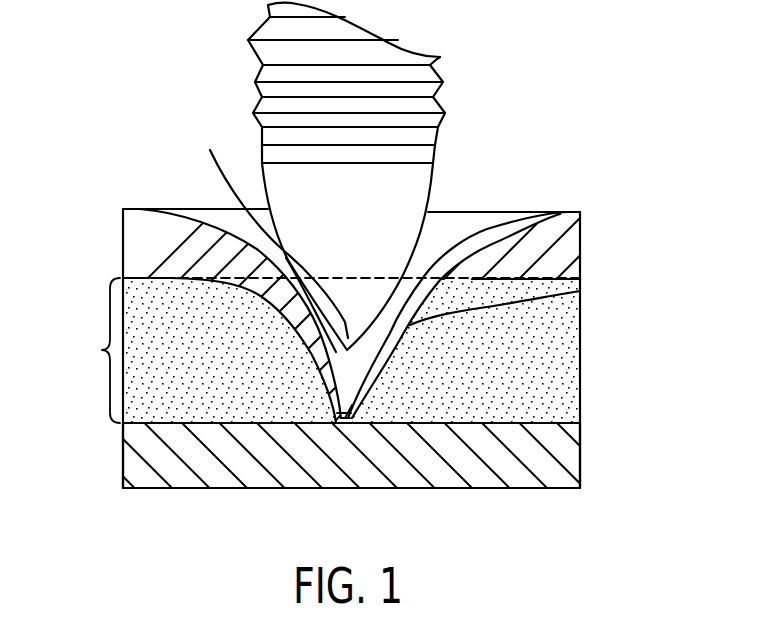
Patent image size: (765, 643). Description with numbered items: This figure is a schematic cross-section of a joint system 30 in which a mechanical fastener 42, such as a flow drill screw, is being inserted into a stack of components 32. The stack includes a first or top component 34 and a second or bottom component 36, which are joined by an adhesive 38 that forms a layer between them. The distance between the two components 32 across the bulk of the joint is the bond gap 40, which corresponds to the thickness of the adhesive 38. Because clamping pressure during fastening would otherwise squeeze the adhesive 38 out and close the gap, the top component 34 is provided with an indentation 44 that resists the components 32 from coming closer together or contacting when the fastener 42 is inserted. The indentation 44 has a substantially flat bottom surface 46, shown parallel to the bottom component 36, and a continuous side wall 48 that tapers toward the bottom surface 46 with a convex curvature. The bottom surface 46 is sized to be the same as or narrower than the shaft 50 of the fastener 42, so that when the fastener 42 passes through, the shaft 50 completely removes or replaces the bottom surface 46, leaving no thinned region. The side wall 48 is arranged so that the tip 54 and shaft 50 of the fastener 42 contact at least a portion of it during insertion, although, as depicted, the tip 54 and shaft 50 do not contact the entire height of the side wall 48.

The joint system 30 is at (94, 113).
The components 32 is at (580, 234).
The first component 34 is at (124, 233).
The second component 36 is at (125, 458).
The adhesive 38 is at (580, 352).
The bond gap 40 is at (98, 350).
The mechanical fastener 42 is at (350, 176).
The indentation 44 is at (342, 396).
The bottom surface 46 is at (349, 412).
The side wall 48 is at (580, 290).
The shaft 50 is at (256, 73).
The tip 54 is at (270, 229).